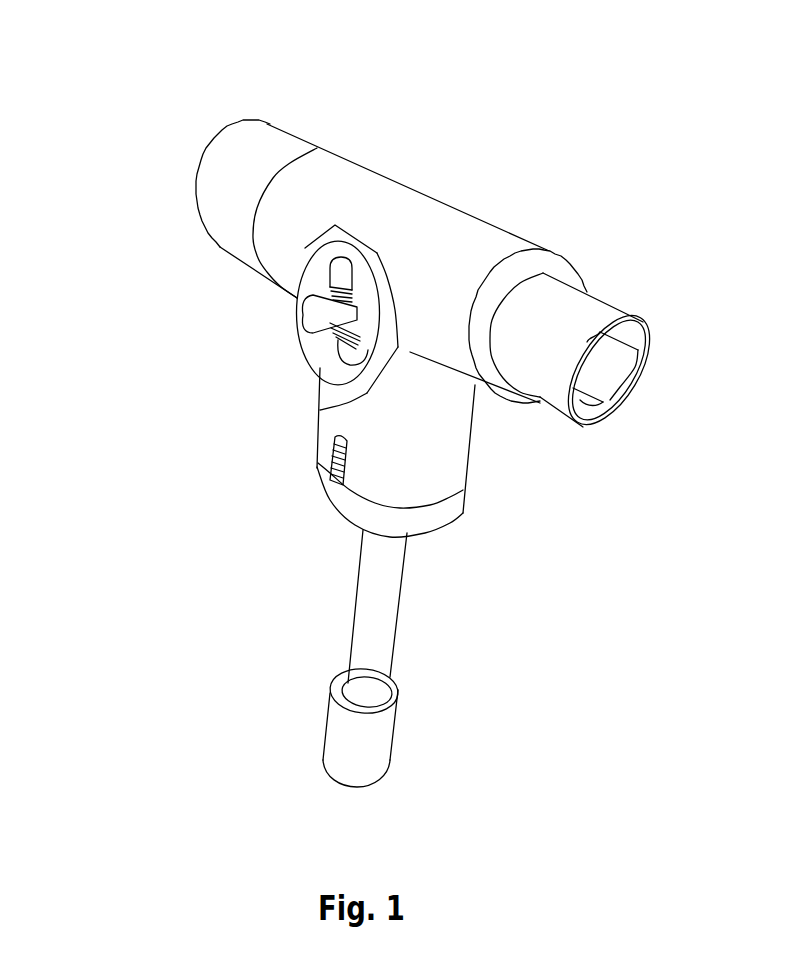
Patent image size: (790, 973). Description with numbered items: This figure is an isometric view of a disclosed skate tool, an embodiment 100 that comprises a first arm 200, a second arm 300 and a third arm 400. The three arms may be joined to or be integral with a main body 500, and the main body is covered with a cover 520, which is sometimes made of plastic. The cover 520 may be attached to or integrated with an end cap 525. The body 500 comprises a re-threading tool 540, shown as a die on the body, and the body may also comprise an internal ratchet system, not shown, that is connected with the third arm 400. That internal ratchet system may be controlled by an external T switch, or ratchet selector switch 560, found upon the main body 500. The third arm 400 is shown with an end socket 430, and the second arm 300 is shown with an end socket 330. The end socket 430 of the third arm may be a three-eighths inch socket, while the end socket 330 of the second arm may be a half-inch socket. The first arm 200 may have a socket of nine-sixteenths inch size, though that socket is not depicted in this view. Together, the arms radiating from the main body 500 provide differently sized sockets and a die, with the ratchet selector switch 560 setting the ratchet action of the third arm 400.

The embodiment 100 is at (513, 217).
The first arm 200 is at (222, 163).
The second arm 300 is at (600, 313).
The end socket 330 is at (637, 368).
The third arm 400 is at (407, 613).
The end socket 430 is at (367, 723).
The main body 500 is at (405, 167).
The cover 520 is at (440, 233).
The end cap 525 is at (428, 518).
The re-threading tool 540 is at (323, 265).
The ratchet selector switch 560 is at (332, 440).